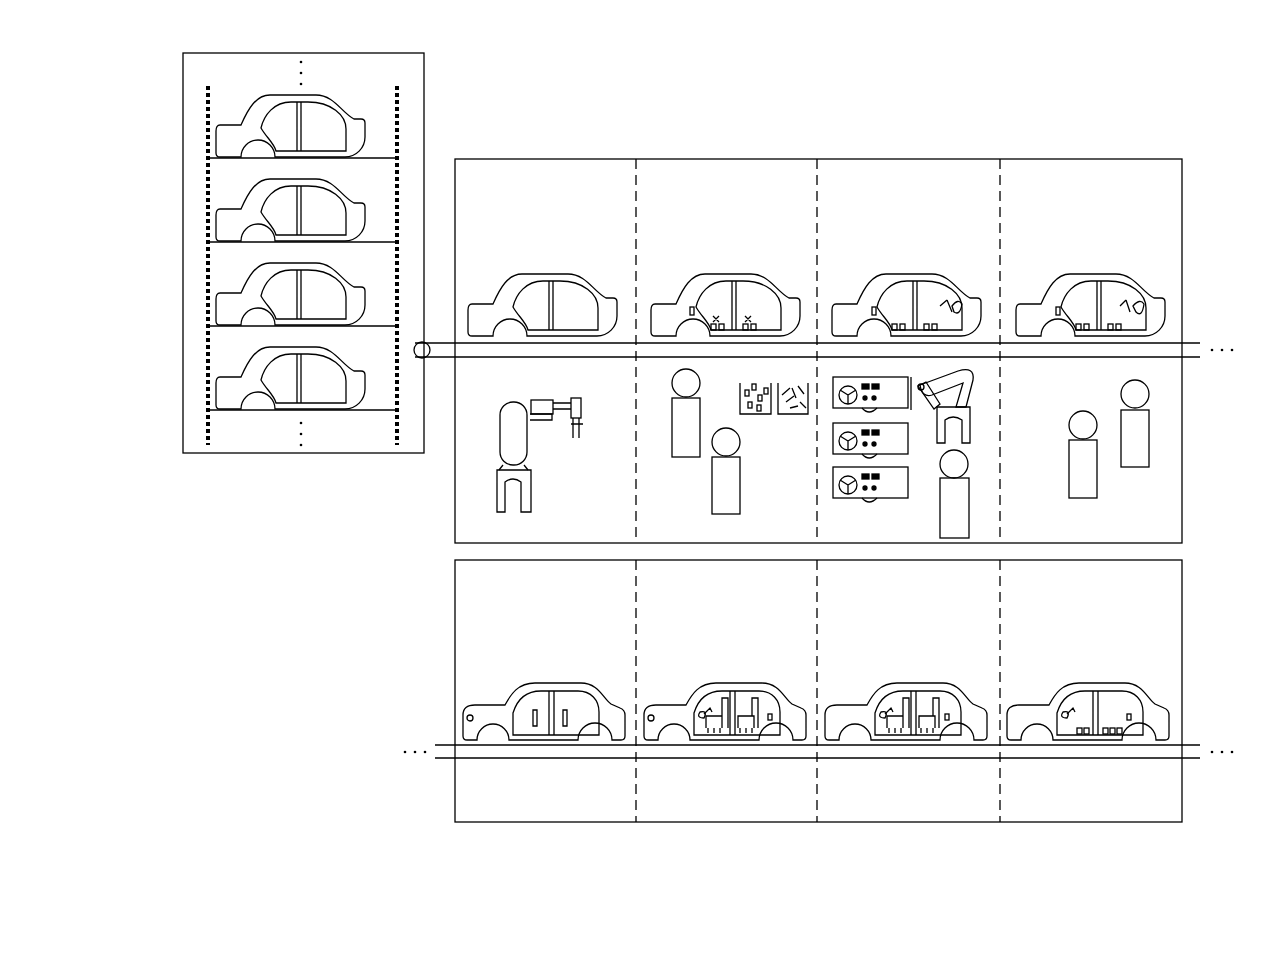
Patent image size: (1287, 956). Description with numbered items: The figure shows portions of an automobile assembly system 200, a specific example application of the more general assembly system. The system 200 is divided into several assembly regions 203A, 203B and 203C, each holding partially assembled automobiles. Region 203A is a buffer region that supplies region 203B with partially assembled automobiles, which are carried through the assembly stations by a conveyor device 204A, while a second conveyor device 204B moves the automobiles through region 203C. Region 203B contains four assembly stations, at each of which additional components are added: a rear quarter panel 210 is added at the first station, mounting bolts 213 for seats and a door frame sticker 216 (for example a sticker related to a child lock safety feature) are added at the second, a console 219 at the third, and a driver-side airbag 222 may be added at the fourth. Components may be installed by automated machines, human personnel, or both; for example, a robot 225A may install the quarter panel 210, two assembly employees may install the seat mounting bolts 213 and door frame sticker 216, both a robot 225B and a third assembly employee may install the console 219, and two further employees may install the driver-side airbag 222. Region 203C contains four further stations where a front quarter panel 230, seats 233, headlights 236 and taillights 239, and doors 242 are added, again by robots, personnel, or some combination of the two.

The automobile assembly system 200 is at (1224, 124).
The buffer region 203A is at (425, 112).
The assembly region 203B is at (1017, 159).
The assembly region 203C is at (1183, 604).
The conveyor device 204A is at (1168, 343).
The conveyor device 204B is at (1078, 759).
The rear quarter panel 210 is at (493, 300).
The mounting bolts for seats 213 is at (744, 322).
The door frame sticker 216 is at (691, 305).
The console 219 is at (948, 296).
The driver-side airbag 222 is at (1126, 296).
The robot 225A is at (531, 491).
The robot 225B is at (970, 434).
The front quarter panel 230 is at (1020, 703).
The seats 233 is at (930, 700).
The headlights 236 is at (649, 710).
The taillights 239 is at (808, 712).
The doors 242 is at (558, 700).